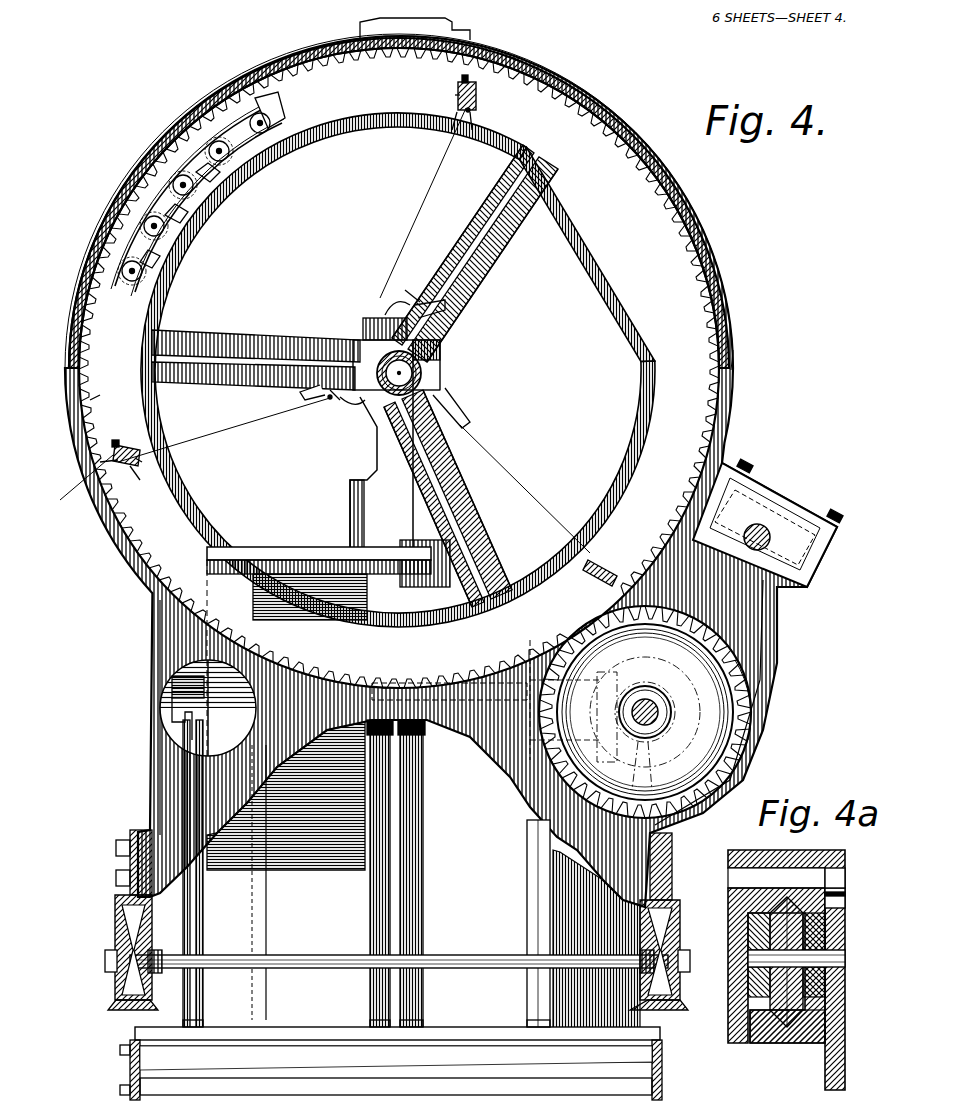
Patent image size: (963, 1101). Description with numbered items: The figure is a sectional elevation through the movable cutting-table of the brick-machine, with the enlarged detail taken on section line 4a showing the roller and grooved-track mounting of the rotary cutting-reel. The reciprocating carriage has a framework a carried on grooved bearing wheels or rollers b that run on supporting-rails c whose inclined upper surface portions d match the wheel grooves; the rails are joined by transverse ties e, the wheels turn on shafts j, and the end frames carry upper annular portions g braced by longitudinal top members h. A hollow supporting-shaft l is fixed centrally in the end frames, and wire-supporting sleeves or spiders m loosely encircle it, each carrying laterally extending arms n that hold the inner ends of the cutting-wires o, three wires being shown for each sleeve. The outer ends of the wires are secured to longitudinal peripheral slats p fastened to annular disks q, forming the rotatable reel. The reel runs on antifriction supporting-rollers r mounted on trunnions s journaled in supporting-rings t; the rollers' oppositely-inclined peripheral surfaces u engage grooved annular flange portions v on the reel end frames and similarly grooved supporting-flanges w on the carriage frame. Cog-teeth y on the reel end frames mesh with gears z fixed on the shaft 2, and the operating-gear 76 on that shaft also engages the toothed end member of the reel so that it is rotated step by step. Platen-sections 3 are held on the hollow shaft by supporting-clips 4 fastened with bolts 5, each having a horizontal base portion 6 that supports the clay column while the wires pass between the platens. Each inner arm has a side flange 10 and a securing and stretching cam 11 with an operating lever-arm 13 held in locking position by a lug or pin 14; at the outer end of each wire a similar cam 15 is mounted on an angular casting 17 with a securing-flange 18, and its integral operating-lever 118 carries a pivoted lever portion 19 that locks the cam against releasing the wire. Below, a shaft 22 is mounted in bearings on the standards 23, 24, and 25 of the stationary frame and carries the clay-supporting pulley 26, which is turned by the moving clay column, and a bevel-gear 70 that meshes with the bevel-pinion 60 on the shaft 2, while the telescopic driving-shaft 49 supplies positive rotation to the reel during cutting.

In FIG. 4, the framework a is at (160, 627).
In FIG. 4, the bearing wheels or rollers b is at (114, 940).
In FIG. 4, the supporting-rails c is at (130, 1060).
In FIG. 4, the inclined upper surface portions d is at (108, 1010).
In FIG. 4, the transverse members or ties e is at (296, 1040).
In FIG. 4, the upper annular portions g is at (696, 225).
In FIG. 4A, the upper annular portions g is at (728, 858).
In FIG. 4, the longitudinal top members h is at (462, 33).
In FIG. 4, the shafts j is at (450, 956).
In FIG. 4, the hollow supporting-shaft l is at (388, 360).
In FIG. 4, the wire-supporting sleeves or spiders m is at (442, 355).
In FIG. 4, the wire-supporting arms n is at (450, 318).
In FIG. 4, the cutting-wires o is at (438, 210).
In FIG. 4, the peripheral slats p is at (477, 106).
In FIG. 4, the annular disks q is at (381, 336).
In FIG. 4A, the annular disks q is at (728, 898).
In FIG. 4, the antifriction supporting-rollers r is at (140, 200).
In FIG. 4A, the antifriction supporting-rollers r is at (800, 918).
In FIG. 4, the trunnions s is at (245, 180).
In FIG. 4A, the trunnions s is at (846, 957).
In FIG. 4, the supporting-rings t is at (168, 215).
In FIG. 4A, the supporting-rings t is at (748, 932).
In FIG. 4A, the oppositely-inclined peripheral surface portions u is at (826, 900).
In FIG. 4, the annular flange portions v is at (165, 160).
In FIG. 4A, the annular flange portions v is at (826, 880).
In FIG. 4, the annular supporting-flanges w is at (168, 262).
In FIG. 4A, the annular supporting-flanges w is at (806, 1012).
In FIG. 4, the cog-teeth y is at (722, 356).
In FIG. 4A, the cog-teeth y is at (730, 878).
In FIG. 4, the gears z is at (738, 668).
In FIG. 4, the shaft 2 is at (660, 714).
In FIG. 4, the hub bracket 3 is at (400, 463).
In FIG. 4, the supporting-clip 4 is at (360, 345).
In FIG. 4, the section line of Fig. 4a is at (268, 218).
In FIG. 4, the bolts 5 is at (383, 320).
In FIG. 4, the supporting base portion 6 is at (272, 552).
In FIG. 4, the side flange portion 10 is at (420, 300).
In FIG. 4, the securing and stretching cam 11 is at (410, 300).
In FIG. 4, the operating lever-arm 13 is at (395, 305).
In FIG. 4, the lug or pin 14 is at (360, 398).
In FIG. 4, the cam 15 is at (452, 120).
In FIG. 4, the angular casting 17 is at (86, 479).
In FIG. 4, the securing-flange 18 is at (470, 115).
In FIG. 4, the pivoted lever portion 19 is at (472, 85).
In FIG. 4, the shaft 22 is at (462, 678).
In FIG. 4, the supporting portion 23 is at (520, 740).
In FIG. 4, the supporting portion 24 is at (424, 740).
In FIG. 4, the supporting portion 25 is at (165, 690).
In FIG. 4, the clay-supporting pulley 26 is at (295, 860).
In FIG. 4, the telescopic rotatable shaft 49 is at (765, 528).
In FIG. 4, the bevel-pinion 60 is at (760, 750).
In FIG. 4, the bevel-gear 70 is at (560, 655).
In FIG. 4, the operating-gear 76 is at (631, 712).
In FIG. 4, the operating-lever portion 118 is at (458, 95).